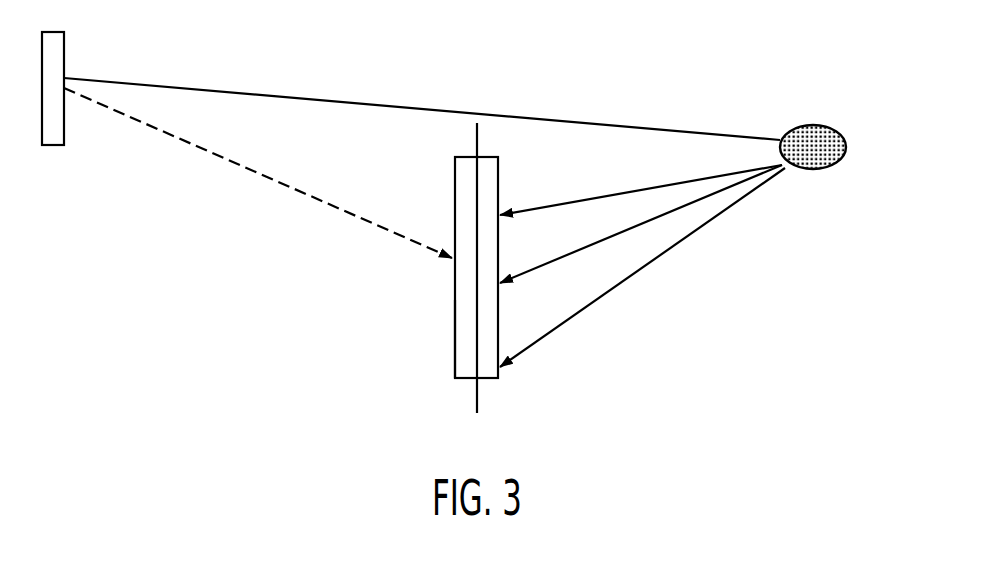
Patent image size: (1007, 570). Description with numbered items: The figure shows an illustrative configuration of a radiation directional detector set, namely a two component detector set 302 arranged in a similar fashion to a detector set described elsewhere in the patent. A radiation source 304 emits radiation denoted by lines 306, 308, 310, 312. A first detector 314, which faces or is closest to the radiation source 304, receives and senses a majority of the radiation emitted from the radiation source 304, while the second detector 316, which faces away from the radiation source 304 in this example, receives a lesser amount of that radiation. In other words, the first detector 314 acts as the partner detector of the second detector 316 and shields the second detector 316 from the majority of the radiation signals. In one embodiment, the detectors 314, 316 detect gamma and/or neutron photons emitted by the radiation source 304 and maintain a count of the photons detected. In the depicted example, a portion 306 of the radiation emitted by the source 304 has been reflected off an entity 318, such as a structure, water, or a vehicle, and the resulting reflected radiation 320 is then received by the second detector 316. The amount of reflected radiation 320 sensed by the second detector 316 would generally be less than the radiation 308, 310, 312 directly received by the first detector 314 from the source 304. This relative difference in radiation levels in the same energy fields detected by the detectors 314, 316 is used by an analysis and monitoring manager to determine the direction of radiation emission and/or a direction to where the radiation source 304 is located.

The two component detector set 302 is at (467, 157).
The radiation source 304 is at (812, 124).
The radiation 306 is at (573, 121).
The radiation 308 is at (523, 208).
The radiation 310 is at (525, 277).
The radiation 312 is at (570, 322).
The first detector 314 is at (487, 178).
The second detector 316 is at (467, 348).
The entity 318 is at (64, 50).
The reflected radiation 320 is at (148, 127).